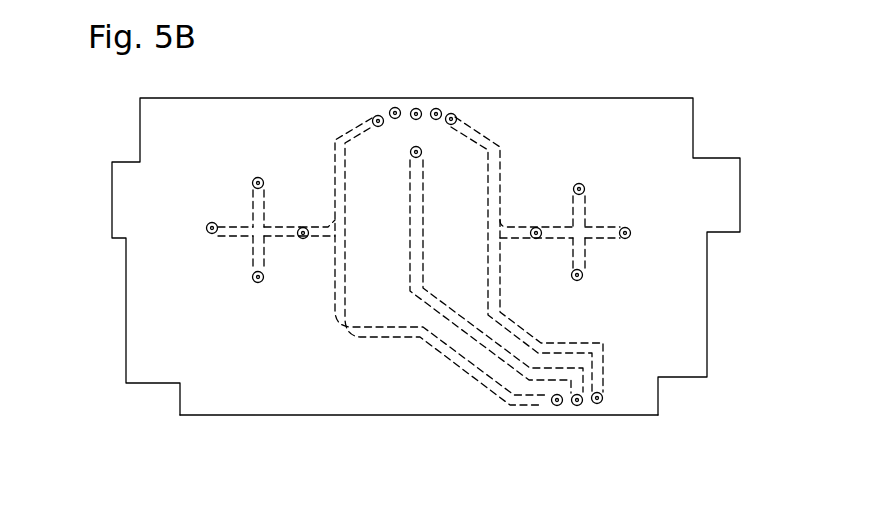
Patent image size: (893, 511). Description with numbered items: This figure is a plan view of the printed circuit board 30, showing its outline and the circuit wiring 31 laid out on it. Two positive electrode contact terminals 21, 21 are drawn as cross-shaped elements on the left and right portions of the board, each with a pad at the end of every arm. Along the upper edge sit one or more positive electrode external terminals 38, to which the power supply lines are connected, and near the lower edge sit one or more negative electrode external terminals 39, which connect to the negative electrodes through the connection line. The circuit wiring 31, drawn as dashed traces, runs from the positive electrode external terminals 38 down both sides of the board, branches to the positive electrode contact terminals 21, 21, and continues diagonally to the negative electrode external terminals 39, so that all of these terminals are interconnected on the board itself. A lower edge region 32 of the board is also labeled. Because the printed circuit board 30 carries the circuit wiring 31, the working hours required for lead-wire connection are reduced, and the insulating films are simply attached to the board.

The positive electrode contact terminal 21 is at (603, 205).
The printed circuit board 30 is at (638, 97).
The circuit wiring 31 is at (500, 172).
The bottom edge of substrate 32 is at (292, 405).
The positive electrode external terminal 38 is at (420, 95).
The negative electrode external terminal 39 is at (580, 407).